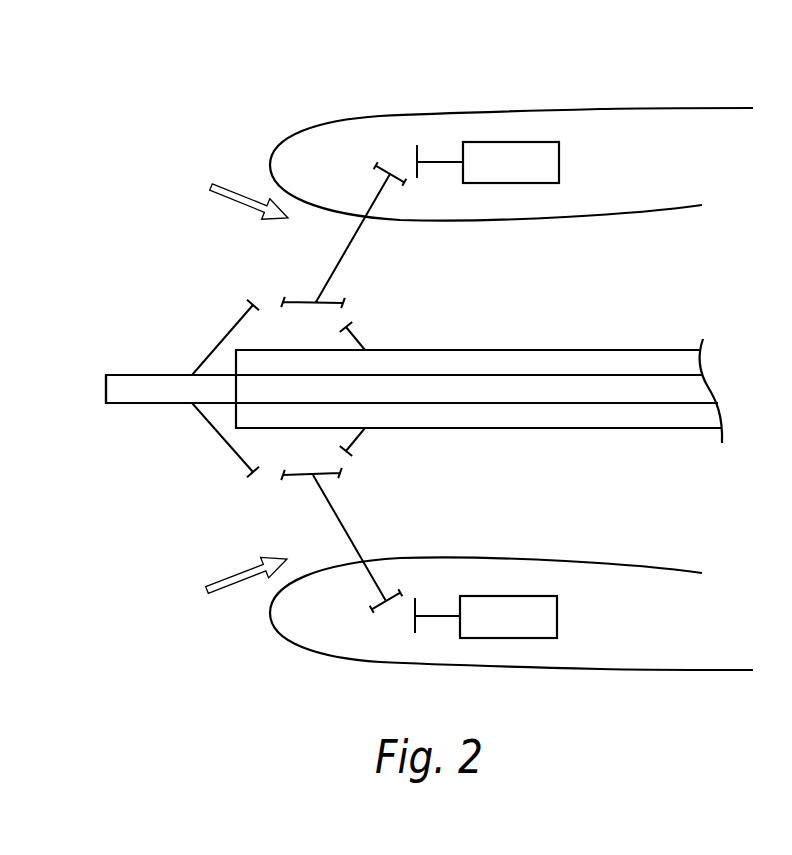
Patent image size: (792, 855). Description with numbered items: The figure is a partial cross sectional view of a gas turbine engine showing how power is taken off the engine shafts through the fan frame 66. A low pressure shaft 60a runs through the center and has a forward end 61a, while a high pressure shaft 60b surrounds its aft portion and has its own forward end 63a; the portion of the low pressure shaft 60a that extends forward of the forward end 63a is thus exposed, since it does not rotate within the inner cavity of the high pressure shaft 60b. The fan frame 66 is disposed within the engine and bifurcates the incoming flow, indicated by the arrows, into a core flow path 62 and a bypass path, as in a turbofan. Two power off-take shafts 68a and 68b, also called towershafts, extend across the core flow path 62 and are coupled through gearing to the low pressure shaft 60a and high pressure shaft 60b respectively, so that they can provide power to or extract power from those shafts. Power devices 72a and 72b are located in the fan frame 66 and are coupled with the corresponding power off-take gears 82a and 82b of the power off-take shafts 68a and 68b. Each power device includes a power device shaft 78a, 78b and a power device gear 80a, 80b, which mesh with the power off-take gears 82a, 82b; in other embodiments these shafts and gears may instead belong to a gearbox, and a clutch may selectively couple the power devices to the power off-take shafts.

The fan frame 66 is at (713, 108).
The core flow path 62 is at (232, 187).
The low pressure shaft 60a is at (150, 403).
The high pressure shaft 60b is at (647, 351).
The forward end 61a is at (105, 403).
The forward end 63a is at (236, 360).
The power off-take shaft 68a is at (355, 500).
The power off-take shaft 68b is at (352, 244).
The power off-take gear 82a is at (370, 617).
The power off-take gear 82b is at (376, 166).
The power device gear 80a is at (415, 597).
The power device gear 80b is at (417, 144).
The power device shaft 78a is at (432, 618).
The power device shaft 78b is at (443, 160).
The power device 72a is at (530, 640).
The power device 72b is at (540, 142).